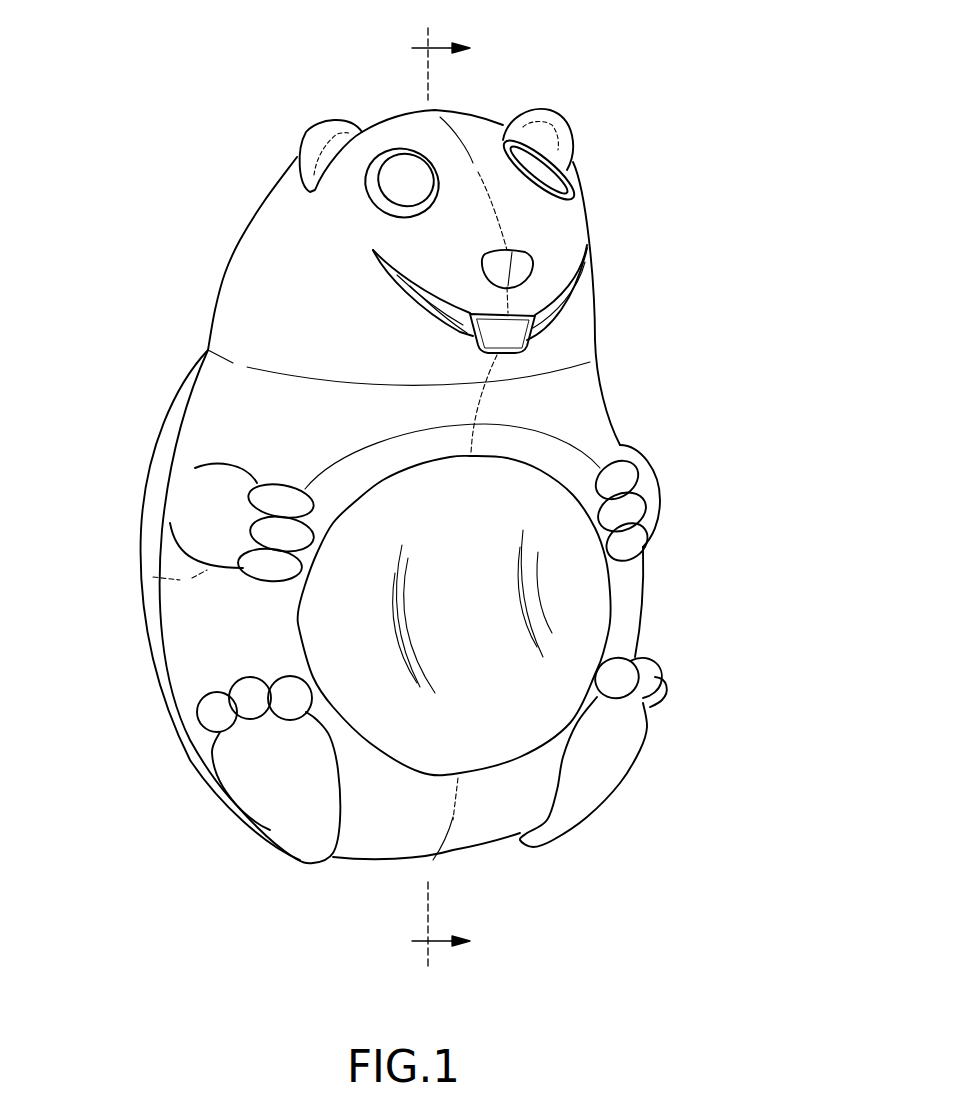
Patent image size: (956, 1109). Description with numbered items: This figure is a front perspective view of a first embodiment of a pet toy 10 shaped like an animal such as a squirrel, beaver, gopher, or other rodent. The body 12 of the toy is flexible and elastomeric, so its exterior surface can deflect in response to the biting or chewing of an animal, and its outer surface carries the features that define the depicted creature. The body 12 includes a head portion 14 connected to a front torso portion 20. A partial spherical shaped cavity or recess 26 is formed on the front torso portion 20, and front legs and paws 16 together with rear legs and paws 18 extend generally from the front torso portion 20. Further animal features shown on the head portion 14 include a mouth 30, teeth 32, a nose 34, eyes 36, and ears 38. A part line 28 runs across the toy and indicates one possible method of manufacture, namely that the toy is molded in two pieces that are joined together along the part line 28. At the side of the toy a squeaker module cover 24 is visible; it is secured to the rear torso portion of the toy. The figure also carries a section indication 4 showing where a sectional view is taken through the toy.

The section line 4- 4 is at (441, 501).
The pet toy 10 is at (688, 140).
The body 12 is at (706, 349).
The head portion 14 is at (414, 277).
The front legs and paws 16 is at (710, 492).
The rear legs and paws 18 is at (713, 762).
The front torso portion 20 is at (713, 610).
The squeaker module cover 24 is at (153, 480).
The partial spherical shaped cavity or recess 26 is at (454, 615).
The part line 28 is at (453, 130).
The mouth 30 is at (413, 305).
The teeth 32 is at (518, 336).
The nose 34 is at (522, 265).
The eyes 36 is at (393, 153).
The ears 38 is at (316, 133).